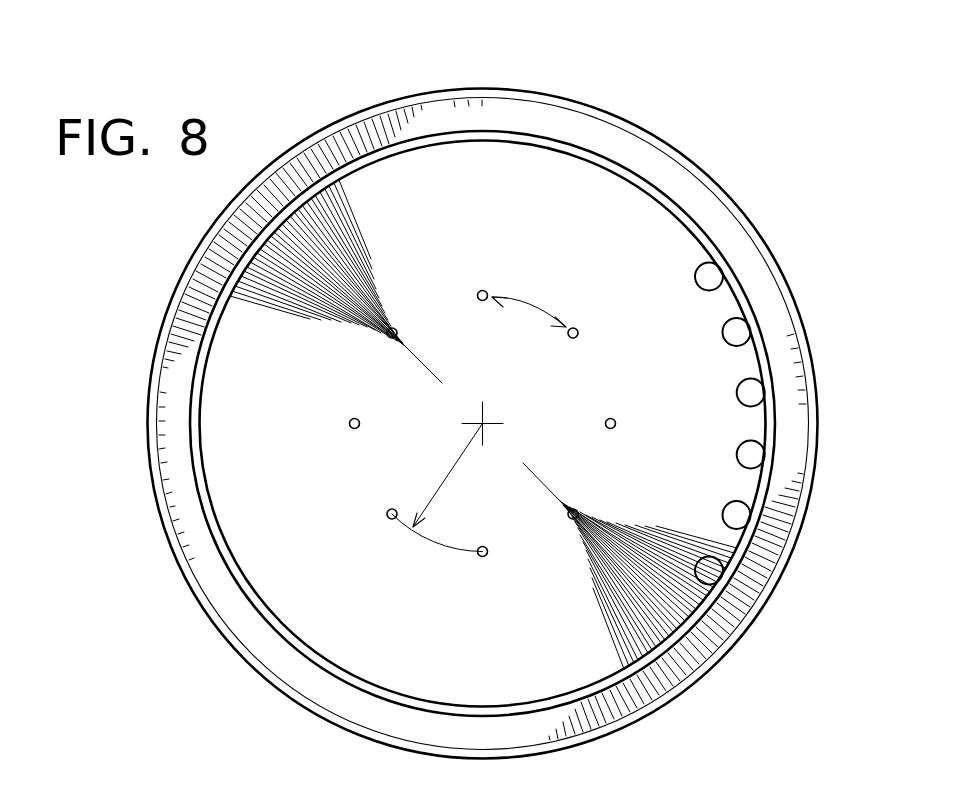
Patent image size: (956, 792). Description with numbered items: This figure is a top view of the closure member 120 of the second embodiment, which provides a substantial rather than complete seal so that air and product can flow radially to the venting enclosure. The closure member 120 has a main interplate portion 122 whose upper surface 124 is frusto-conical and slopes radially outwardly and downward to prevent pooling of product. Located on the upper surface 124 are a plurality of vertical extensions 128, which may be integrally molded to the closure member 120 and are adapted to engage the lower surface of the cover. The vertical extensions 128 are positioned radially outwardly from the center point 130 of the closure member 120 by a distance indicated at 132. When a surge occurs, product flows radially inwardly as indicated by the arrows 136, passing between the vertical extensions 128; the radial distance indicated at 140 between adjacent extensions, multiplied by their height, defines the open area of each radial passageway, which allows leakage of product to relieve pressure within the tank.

The closure member 120 is at (608, 105).
The main interplate portion 122 is at (600, 200).
The upper surface 124 is at (625, 232).
The vertical extensions 128 is at (397, 327).
The center point 130 is at (480, 422).
The radial distance of vertical extensions 132 is at (437, 490).
The arrows indicating radial inward product flow 136 is at (645, 358).
The radial distance between vertical extensions 140 is at (533, 305).